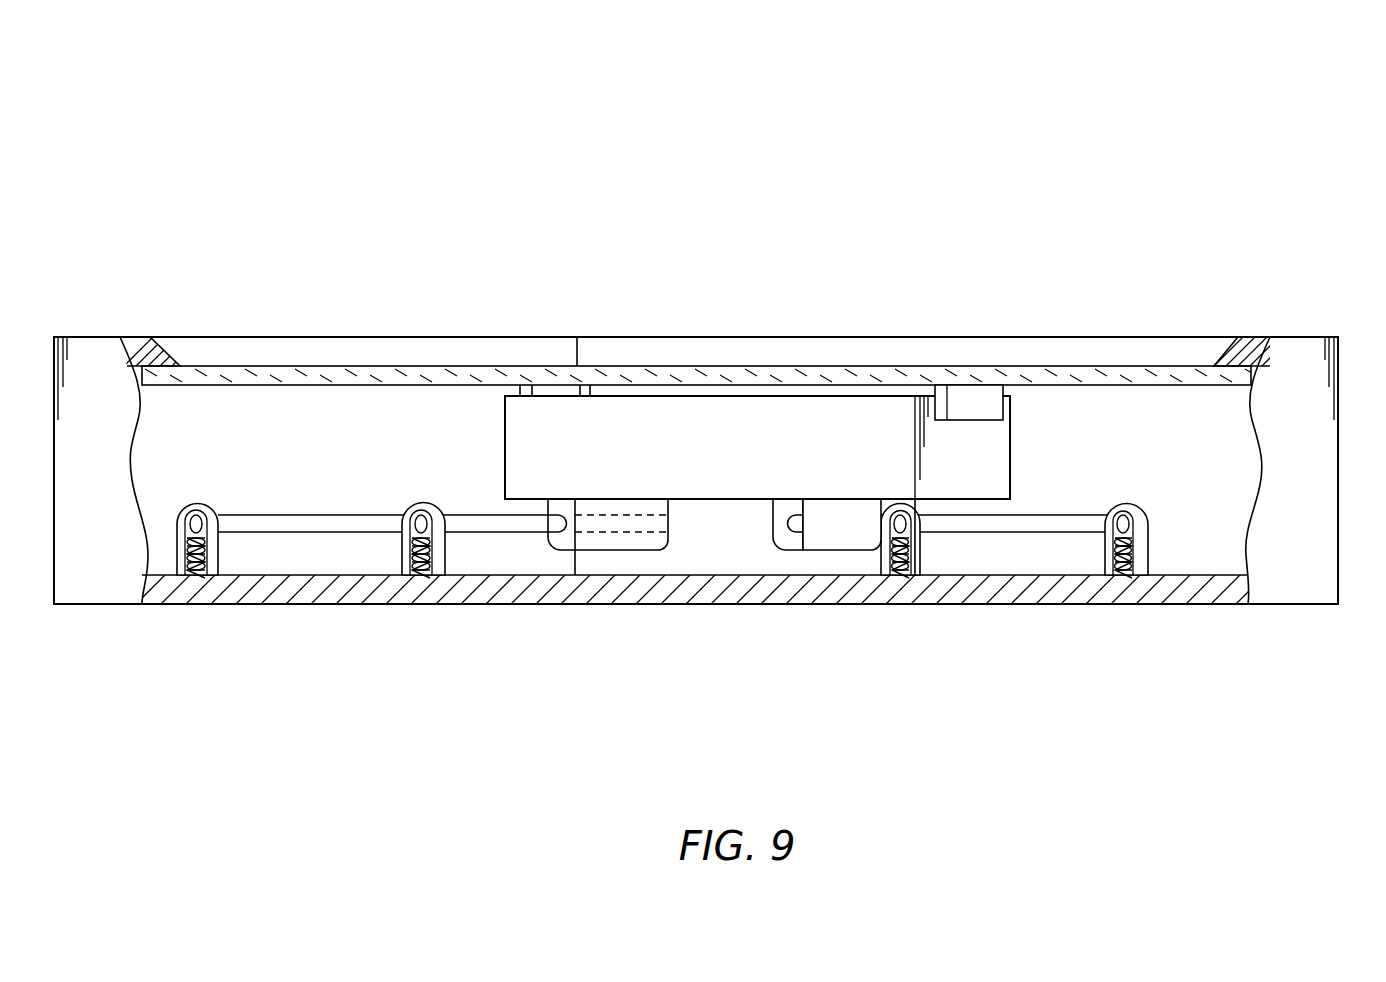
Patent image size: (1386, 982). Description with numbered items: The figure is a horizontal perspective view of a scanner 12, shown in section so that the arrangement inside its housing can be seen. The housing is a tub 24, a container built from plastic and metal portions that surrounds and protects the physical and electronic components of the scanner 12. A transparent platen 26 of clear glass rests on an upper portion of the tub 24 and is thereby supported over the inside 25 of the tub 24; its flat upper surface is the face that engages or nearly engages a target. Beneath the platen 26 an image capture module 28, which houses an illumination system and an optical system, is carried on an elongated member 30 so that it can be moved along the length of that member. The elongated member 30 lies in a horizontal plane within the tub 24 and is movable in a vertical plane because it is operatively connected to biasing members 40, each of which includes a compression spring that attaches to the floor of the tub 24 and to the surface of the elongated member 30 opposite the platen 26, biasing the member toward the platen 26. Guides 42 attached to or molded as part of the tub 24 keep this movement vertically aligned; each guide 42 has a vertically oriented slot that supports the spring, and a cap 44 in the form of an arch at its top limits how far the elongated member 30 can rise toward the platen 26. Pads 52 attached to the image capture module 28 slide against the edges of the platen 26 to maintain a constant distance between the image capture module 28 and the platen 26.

The scanner 12 is at (1012, 142).
The tub 24 is at (150, 343).
The inside 25 is at (1085, 413).
The platen 26 is at (365, 370).
The image capture module 28 is at (733, 477).
The elongated member 30 is at (500, 527).
The biasing member 40 is at (659, 563).
The guide 42 is at (213, 557).
The cap 44 is at (190, 505).
The pad 52 is at (547, 388).